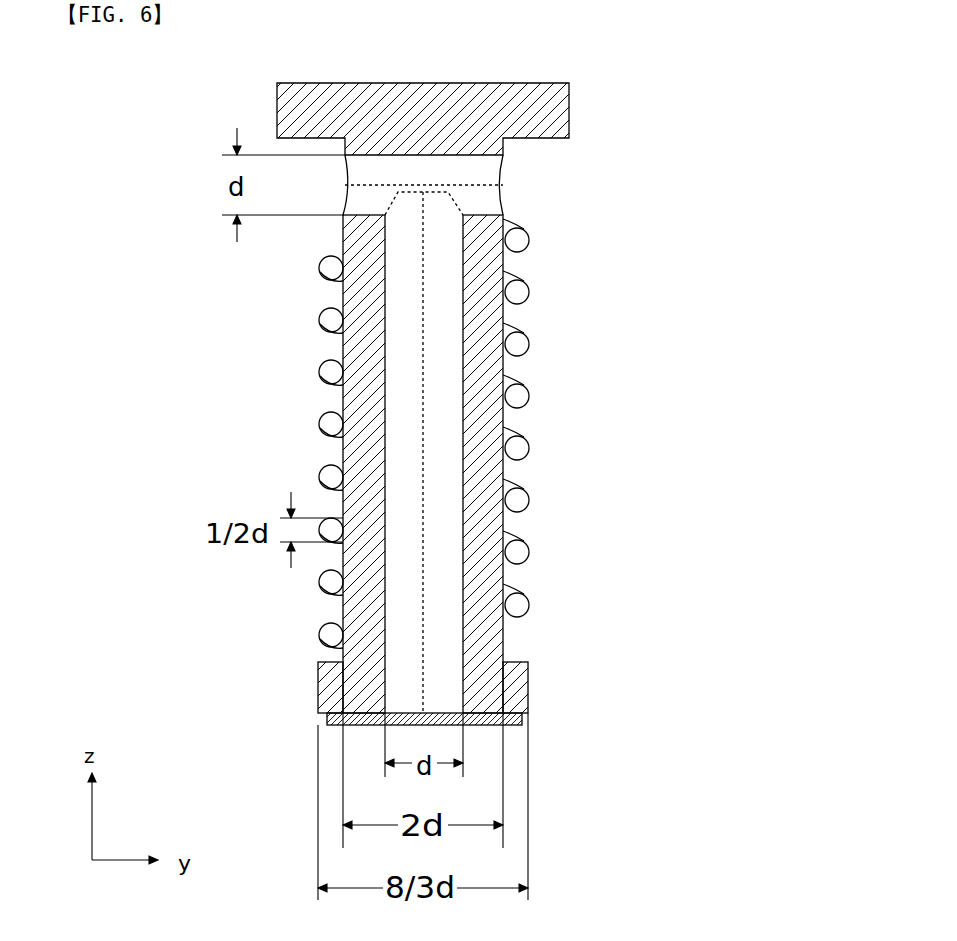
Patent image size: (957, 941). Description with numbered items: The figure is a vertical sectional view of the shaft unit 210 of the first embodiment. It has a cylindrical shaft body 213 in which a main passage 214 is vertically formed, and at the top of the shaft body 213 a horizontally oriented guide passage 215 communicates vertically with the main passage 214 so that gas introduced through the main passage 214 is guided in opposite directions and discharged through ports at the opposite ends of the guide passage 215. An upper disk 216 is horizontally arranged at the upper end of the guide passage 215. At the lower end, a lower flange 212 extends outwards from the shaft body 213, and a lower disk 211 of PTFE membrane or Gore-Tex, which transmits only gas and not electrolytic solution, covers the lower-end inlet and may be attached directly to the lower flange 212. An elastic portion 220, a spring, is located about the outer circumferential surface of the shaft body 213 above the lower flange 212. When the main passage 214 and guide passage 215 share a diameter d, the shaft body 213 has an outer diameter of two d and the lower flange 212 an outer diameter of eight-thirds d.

The shaft unit 210 is at (750, 95).
The lower disk 211 is at (522, 725).
The lower flange 212 is at (507, 663).
The shaft body 213 is at (506, 538).
The main passage 214 is at (415, 308).
The guide passage 215 is at (421, 174).
The upper disk 216 is at (568, 92).
The elastic portion 220 is at (320, 423).